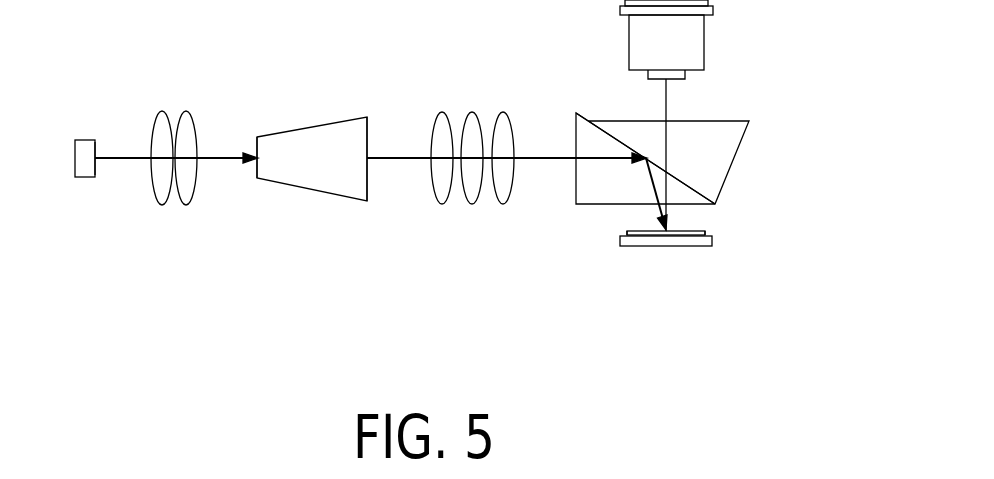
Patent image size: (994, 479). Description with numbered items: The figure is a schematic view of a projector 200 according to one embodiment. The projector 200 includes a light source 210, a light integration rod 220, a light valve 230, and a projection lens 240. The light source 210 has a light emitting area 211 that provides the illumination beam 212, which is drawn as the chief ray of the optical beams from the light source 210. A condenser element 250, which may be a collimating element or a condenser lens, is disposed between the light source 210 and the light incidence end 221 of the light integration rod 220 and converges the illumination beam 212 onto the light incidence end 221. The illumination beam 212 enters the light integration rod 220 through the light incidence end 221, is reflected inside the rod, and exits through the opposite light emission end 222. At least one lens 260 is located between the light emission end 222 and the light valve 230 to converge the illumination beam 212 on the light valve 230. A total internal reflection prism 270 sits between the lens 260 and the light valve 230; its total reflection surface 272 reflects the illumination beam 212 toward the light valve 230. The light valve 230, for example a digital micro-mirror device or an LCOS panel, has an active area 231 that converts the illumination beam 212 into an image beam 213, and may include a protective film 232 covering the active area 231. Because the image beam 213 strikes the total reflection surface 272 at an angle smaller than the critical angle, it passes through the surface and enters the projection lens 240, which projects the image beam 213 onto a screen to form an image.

The projector 200 is at (849, 353).
The light source 210 is at (83, 141).
The light emitting area 211 is at (107, 150).
The illumination beam 212 is at (107, 163).
The image beam 213 is at (670, 211).
The light integration rod 220 is at (313, 177).
The light incidence end 221 is at (254, 137).
The light emission end 222 is at (380, 148).
The light valve 230 is at (677, 243).
The active area 231 is at (630, 232).
The protective film 232 is at (707, 234).
The projection lens 240 is at (697, 47).
The condenser element 250 is at (161, 204).
The lens 260 is at (442, 205).
The total internal reflection prism 270 is at (727, 152).
The total reflection surface 272 is at (597, 133).